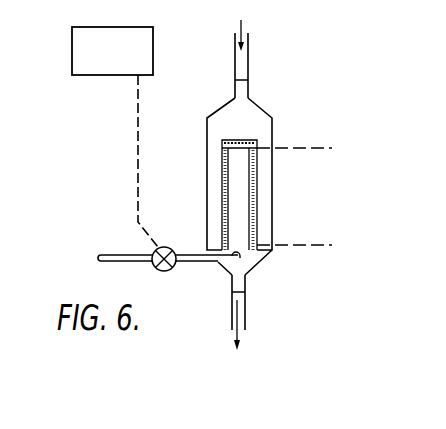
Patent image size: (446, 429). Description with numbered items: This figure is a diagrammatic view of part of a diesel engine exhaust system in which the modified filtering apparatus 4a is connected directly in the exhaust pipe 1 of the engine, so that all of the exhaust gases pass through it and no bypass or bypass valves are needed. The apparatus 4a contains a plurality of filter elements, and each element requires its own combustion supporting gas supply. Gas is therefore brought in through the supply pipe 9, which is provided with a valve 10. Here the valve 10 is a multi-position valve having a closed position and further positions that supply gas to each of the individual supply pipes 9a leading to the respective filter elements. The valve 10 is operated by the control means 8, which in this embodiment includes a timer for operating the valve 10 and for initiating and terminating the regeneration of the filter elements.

The exhaust pipe 1 is at (254, 57).
The modified filtering apparatus 4a is at (283, 109).
The control means 8 is at (117, 60).
The supply pipe 9 is at (122, 255).
The individual supply pipe 9a is at (203, 262).
The valve 10 is at (166, 247).